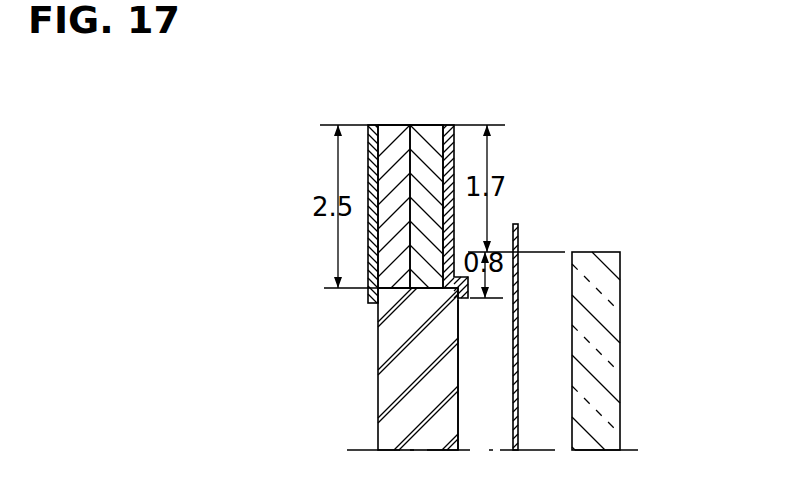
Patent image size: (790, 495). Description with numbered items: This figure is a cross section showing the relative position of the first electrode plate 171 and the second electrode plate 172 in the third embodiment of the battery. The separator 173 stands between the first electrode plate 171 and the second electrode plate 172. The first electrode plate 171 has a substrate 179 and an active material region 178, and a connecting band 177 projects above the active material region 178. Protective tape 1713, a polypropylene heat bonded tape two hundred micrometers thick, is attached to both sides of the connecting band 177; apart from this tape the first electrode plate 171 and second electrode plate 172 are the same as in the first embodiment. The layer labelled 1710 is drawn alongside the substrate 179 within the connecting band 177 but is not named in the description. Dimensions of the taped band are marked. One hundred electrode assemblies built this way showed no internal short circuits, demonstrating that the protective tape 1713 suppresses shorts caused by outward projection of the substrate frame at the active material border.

The first electrode plate 171 is at (389, 385).
The second electrode plate 172 is at (606, 338).
The separator 173 is at (520, 263).
The connecting band 177 is at (413, 226).
The active material region 178 is at (459, 400).
The substrate 179 is at (394, 142).
The second layer 1710 is at (425, 147).
The protective tape 1713 is at (368, 139).